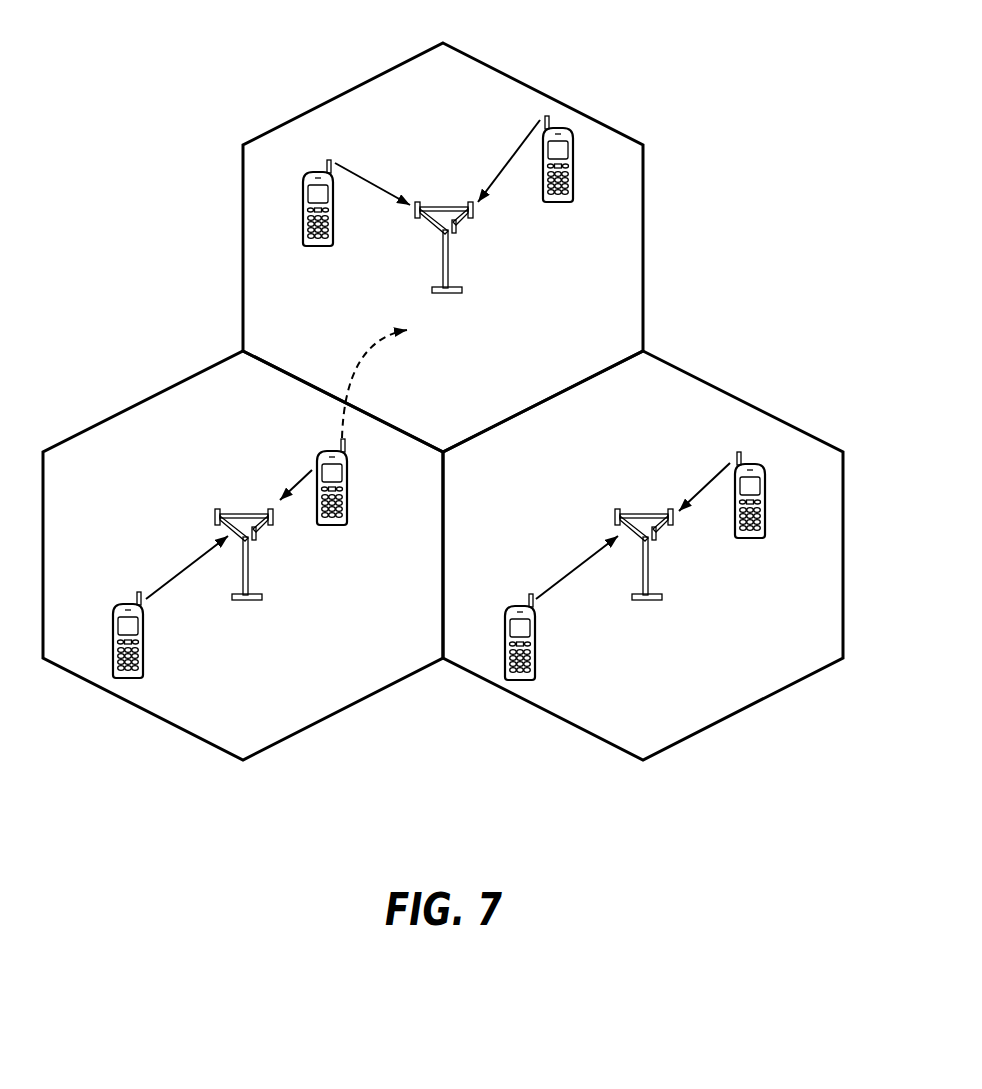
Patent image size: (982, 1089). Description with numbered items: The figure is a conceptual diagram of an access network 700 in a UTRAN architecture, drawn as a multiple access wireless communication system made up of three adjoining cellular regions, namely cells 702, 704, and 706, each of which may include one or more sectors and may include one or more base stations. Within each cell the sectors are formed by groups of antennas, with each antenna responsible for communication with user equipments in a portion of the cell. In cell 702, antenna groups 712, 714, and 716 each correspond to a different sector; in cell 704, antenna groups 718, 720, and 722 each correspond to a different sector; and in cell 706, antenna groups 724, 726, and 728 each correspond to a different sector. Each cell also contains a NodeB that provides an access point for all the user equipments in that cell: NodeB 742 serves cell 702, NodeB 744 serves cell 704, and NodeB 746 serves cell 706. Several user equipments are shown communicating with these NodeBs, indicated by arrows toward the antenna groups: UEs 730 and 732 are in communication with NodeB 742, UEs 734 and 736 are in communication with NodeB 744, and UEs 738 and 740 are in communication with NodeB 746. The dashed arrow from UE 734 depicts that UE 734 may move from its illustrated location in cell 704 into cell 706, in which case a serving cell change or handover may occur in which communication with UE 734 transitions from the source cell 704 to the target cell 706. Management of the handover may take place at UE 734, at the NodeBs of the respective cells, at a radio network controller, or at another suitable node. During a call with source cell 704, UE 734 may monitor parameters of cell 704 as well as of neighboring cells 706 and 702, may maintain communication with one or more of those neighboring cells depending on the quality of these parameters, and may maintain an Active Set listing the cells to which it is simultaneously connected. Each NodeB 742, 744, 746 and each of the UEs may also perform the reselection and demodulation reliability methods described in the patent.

The access network 700 is at (752, 75).
The cell 702 is at (740, 400).
The cell 704 is at (120, 412).
The cell 706 is at (528, 85).
The antenna group 712 is at (614, 512).
The antenna group 714 is at (652, 540).
The antenna group 716 is at (672, 527).
The antenna group 718 is at (252, 540).
The antenna group 720 is at (271, 527).
The antenna group 722 is at (216, 512).
The antenna group 724 is at (416, 218).
The antenna group 726 is at (456, 233).
The antenna group 728 is at (473, 218).
The UE 730 is at (766, 482).
The UE 732 is at (505, 628).
The UE 734 is at (348, 470).
The UE 736 is at (113, 628).
The UE 738 is at (315, 247).
The UE 740 is at (560, 200).
The NodeB 742 is at (642, 534).
The NodeB 744 is at (243, 534).
The NodeB 746 is at (443, 227).